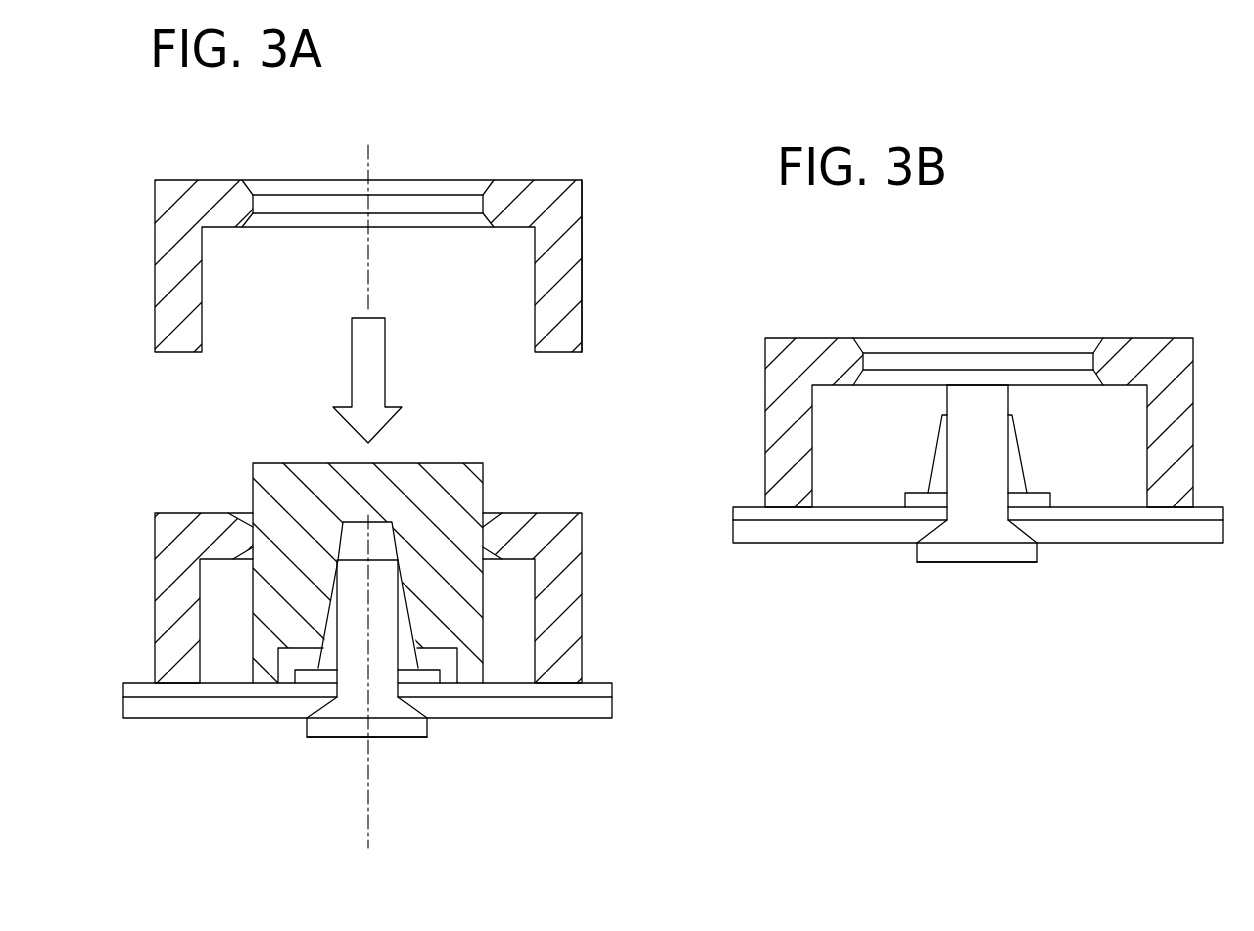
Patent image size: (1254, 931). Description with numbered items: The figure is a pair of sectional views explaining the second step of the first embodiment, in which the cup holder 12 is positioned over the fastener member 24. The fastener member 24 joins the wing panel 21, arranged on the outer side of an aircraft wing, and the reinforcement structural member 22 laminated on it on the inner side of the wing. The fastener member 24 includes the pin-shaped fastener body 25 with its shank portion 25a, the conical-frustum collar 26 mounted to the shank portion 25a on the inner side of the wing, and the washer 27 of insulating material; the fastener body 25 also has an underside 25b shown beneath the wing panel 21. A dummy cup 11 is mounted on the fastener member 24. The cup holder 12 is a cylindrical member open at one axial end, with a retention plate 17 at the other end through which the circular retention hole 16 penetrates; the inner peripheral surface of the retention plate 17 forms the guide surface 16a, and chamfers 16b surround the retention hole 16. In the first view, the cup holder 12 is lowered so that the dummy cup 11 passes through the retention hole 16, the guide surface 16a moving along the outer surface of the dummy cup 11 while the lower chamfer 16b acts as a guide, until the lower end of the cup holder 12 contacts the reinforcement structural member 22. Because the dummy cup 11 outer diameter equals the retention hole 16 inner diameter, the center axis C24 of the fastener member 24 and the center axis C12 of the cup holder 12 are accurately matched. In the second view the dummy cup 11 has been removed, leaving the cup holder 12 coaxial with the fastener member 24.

In FIG. 3A, the dummy cup 11 is at (457, 463).
In FIG. 3A, the cup holder 12 is at (405, 395).
In FIG. 3B, the cup holder 12 is at (980, 386).
In FIG. 3A, the retention hole 16 is at (455, 197).
In FIG. 3B, the retention hole 16 is at (1067, 355).
In FIG. 3A, the guide surface 16a is at (278, 197).
In FIG. 3B, the guide surface 16a is at (893, 350).
In FIG. 3A, the chamfers 16b is at (487, 196).
In FIG. 3B, the chamfers 16b is at (1093, 360).
In FIG. 3A, the retention plate 17 is at (582, 192).
In FIG. 3A, the wing panel 21 is at (530, 720).
In FIG. 3B, the wing panel 21 is at (1165, 547).
In FIG. 3A, the reinforcement structural member 22 is at (600, 683).
In FIG. 3B, the reinforcement structural member 22 is at (1207, 507).
In FIG. 3A, the fastener member 24 is at (451, 617).
In FIG. 3B, the fastener member 24 is at (986, 467).
In FIG. 3A, the fastener body 25 is at (422, 740).
In FIG. 3B, the fastener body 25 is at (1028, 567).
In FIG. 3A, the shank portion 25a is at (358, 553).
In FIG. 3B, the shank portion 25a is at (983, 377).
In FIG. 3A, the bottom surface of head 25b is at (327, 740).
In FIG. 3B, the bottom surface of head 25b is at (932, 567).
In FIG. 3A, the collar 26 is at (407, 602).
In FIG. 3B, the collar 26 is at (1022, 435).
In FIG. 3A, the washer 27 is at (427, 665).
In FIG. 3B, the washer 27 is at (1040, 493).
In FIG. 3A, the center axis of the cup holder C12 is at (368, 293).
In FIG. 3A, the center axis of the fastener member C24 is at (368, 822).